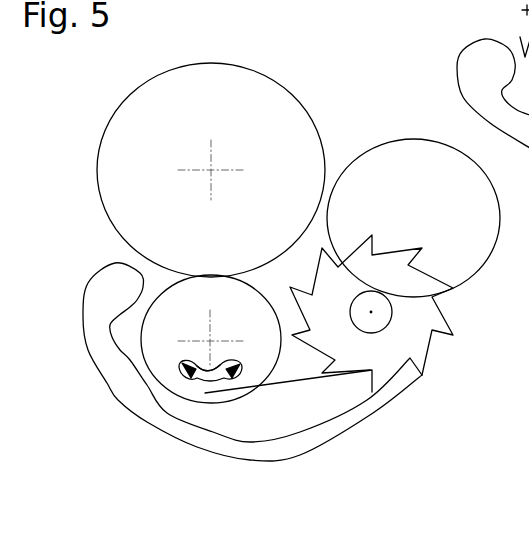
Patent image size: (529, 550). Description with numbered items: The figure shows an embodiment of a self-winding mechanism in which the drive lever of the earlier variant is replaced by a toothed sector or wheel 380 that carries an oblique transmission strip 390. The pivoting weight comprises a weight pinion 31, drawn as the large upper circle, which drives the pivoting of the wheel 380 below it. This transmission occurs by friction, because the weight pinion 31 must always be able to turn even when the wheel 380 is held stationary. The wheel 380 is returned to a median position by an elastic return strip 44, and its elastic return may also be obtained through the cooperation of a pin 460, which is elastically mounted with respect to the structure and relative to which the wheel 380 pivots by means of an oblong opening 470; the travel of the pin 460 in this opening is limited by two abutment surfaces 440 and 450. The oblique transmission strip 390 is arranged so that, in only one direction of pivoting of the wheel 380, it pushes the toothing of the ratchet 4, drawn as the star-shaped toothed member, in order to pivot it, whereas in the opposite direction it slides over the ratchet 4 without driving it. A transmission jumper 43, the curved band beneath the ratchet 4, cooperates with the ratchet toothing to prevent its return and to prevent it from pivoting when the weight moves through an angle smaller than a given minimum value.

The weight pinion 31 is at (292, 97).
The wheel 380 is at (160, 364).
The ratchet 4 is at (440, 323).
The elastic return strip 44 is at (512, 33).
The transmission jumper 43 is at (372, 407).
The oblique transmission strip 390 is at (312, 380).
The abutment surface 440 is at (193, 380).
The oblong opening 470 is at (195, 378).
The pin 460 is at (202, 380).
The abutment surface 450 is at (223, 381).